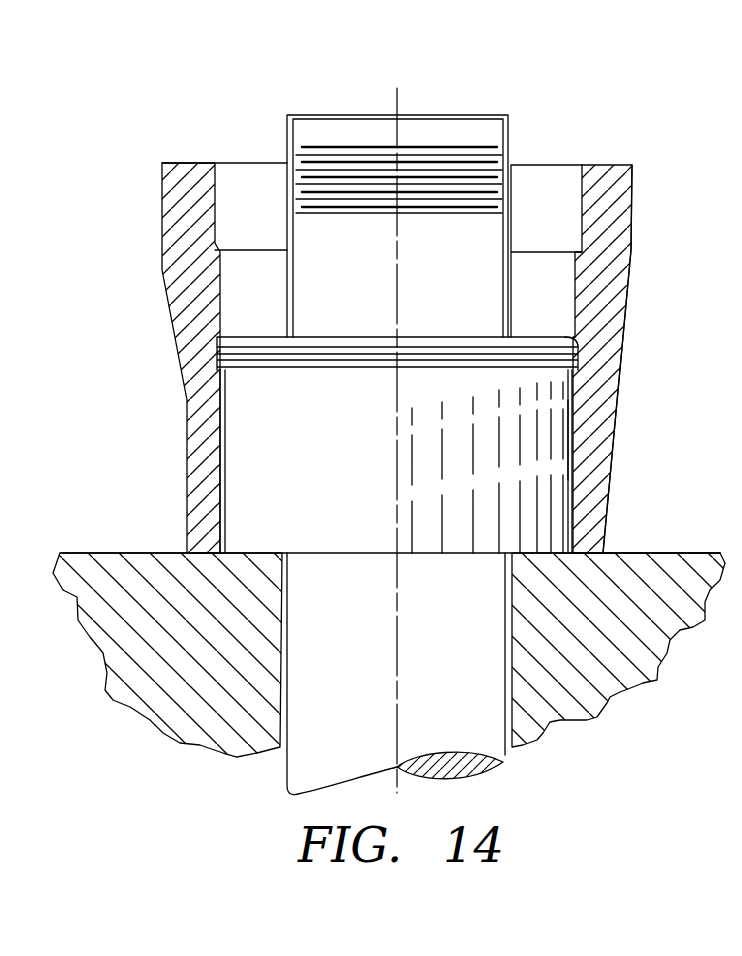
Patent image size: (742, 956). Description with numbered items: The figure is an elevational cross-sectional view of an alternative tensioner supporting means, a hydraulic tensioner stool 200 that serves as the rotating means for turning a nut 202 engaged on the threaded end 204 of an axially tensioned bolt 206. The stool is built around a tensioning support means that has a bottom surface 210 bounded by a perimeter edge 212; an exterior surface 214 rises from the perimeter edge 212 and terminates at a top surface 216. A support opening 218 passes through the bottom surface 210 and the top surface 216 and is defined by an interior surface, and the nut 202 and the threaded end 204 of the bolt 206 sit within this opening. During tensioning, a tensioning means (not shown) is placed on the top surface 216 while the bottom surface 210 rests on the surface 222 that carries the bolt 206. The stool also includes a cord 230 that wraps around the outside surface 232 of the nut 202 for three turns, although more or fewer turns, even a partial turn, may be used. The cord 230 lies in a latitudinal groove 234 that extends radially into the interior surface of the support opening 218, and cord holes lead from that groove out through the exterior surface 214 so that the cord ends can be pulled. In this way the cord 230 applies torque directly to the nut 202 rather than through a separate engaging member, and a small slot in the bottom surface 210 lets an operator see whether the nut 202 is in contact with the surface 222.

The hydraulic tensioner stool 200 is at (672, 65).
The nut 202 is at (527, 337).
The threaded end 204 is at (447, 114).
The bolt 206 is at (283, 693).
The bottom surface 210 is at (590, 545).
The perimeter edge 212 is at (603, 553).
The exterior surface 214 is at (618, 352).
The top surface 216 is at (622, 165).
The support opening 218 is at (534, 165).
The surface 222 is at (145, 553).
The cord 230 is at (573, 338).
The outside surface 232 is at (569, 440).
The latitudinal groove 234 is at (187, 390).